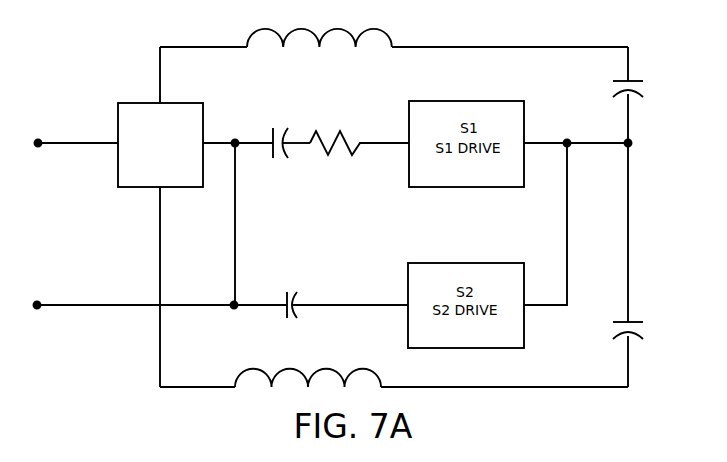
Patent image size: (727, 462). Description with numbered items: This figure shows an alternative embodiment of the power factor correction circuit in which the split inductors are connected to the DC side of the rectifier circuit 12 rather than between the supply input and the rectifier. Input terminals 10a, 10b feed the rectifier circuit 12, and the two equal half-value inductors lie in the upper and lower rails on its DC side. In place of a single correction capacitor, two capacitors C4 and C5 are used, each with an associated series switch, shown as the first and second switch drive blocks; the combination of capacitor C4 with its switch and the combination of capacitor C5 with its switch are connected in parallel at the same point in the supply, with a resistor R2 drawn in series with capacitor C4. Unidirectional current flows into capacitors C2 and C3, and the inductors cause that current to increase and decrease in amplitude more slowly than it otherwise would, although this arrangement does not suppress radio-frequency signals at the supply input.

The first input terminal 10a is at (75, 133).
The second input terminal 10b is at (132, 295).
The rectifier circuit 12 is at (145, 118).
The capacitor C2 is at (644, 86).
The capacitor C3 is at (642, 330).
The capacitor C4 is at (278, 131).
The capacitor C5 is at (296, 294).
The resistor R2 is at (337, 130).